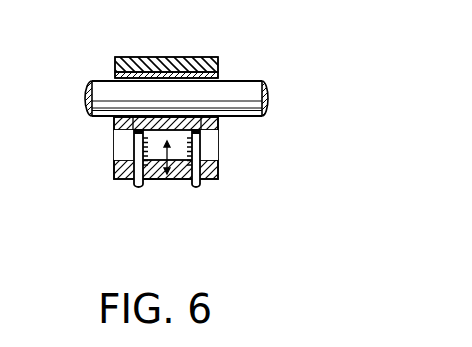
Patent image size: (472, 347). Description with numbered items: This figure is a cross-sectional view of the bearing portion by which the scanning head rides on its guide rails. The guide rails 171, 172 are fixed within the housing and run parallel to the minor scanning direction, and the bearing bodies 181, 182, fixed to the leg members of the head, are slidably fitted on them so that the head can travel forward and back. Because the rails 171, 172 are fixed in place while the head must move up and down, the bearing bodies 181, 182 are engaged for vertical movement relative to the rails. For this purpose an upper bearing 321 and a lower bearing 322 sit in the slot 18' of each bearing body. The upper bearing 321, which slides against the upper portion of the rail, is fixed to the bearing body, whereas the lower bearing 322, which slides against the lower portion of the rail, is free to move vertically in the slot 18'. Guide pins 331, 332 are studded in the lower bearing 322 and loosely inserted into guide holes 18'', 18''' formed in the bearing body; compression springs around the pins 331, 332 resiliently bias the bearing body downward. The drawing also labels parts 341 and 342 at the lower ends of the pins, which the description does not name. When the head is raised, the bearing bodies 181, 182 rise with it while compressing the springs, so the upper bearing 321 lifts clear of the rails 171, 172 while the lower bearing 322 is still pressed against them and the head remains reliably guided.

The bearing body 181 is at (145, 63).
The bearing body 182 is at (166, 64).
The upper bearing 321 is at (196, 68).
The guide rail 171 is at (243, 93).
The guide rail 172 is at (176, 98).
The slot 18' is at (139, 146).
The lower bearing 322 is at (220, 120).
The guide pin 332 is at (114, 146).
The guide pin 331 is at (208, 150).
The left pin 342 is at (130, 185).
The right pin 341 is at (204, 185).
The guide hole 18'' is at (191, 198).
The guide hole 18''' is at (158, 217).